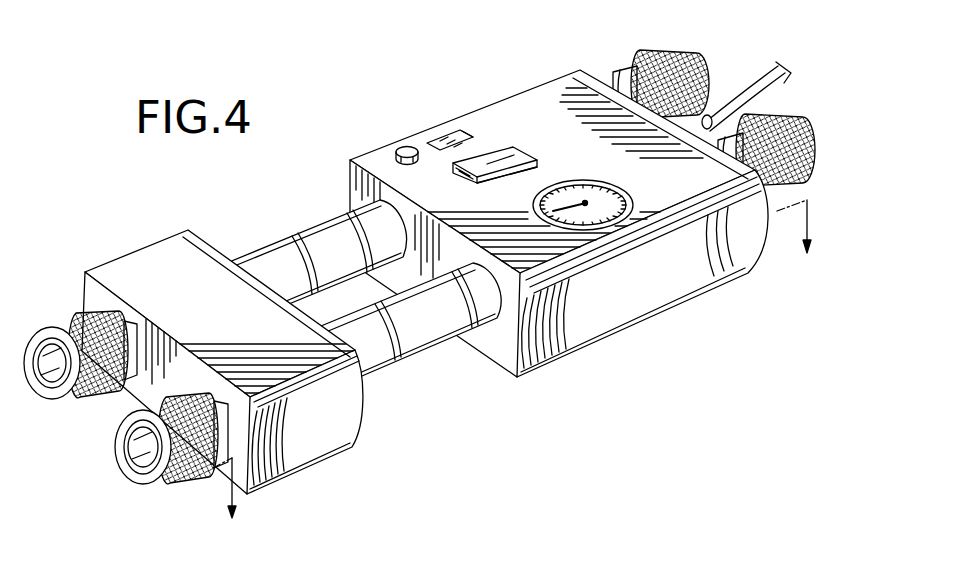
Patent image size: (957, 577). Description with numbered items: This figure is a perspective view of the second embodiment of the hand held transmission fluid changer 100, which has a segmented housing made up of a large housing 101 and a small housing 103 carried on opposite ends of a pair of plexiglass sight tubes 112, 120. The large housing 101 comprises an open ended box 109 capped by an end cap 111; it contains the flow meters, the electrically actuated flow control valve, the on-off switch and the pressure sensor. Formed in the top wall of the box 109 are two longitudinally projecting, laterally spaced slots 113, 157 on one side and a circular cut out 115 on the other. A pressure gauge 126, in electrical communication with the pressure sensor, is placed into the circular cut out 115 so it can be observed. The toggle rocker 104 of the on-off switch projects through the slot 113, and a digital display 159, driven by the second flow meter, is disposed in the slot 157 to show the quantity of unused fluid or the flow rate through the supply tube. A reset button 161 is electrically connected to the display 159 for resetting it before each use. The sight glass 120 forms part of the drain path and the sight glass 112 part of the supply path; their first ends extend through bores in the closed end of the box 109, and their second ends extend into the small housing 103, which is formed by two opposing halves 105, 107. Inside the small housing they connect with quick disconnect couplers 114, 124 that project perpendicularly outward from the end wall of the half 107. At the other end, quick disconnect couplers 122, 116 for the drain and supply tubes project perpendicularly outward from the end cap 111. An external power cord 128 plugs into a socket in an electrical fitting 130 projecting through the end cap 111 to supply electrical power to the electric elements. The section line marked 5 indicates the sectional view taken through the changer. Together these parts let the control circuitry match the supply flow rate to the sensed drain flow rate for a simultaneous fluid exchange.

The section line 5- 5 is at (514, 377).
The hand held transmission fluid changer 100 is at (424, 412).
The large housing 101 is at (644, 330).
The small housing 103 is at (305, 496).
The toggle rocker 104 is at (512, 157).
The half 105 is at (333, 448).
The half 107 is at (275, 483).
The open ended box 109 is at (590, 332).
The end cap 111 is at (760, 270).
The sight tube 112 is at (287, 246).
The slot 113 is at (539, 162).
The quick disconnect coupler 114 is at (64, 326).
The circular cut out 115 is at (609, 191).
The quick disconnect coupler 116 is at (655, 58).
The sight tube 120 is at (410, 352).
The quick disconnect coupler 122 is at (776, 130).
The quick disconnect coupler 124 is at (184, 474).
The pressure gauge 126 is at (622, 197).
The external power cord 128 is at (763, 75).
The electrical fitting 130 is at (704, 118).
The slot 157 is at (473, 134).
The digital display 159 is at (440, 138).
The reset button 161 is at (399, 148).